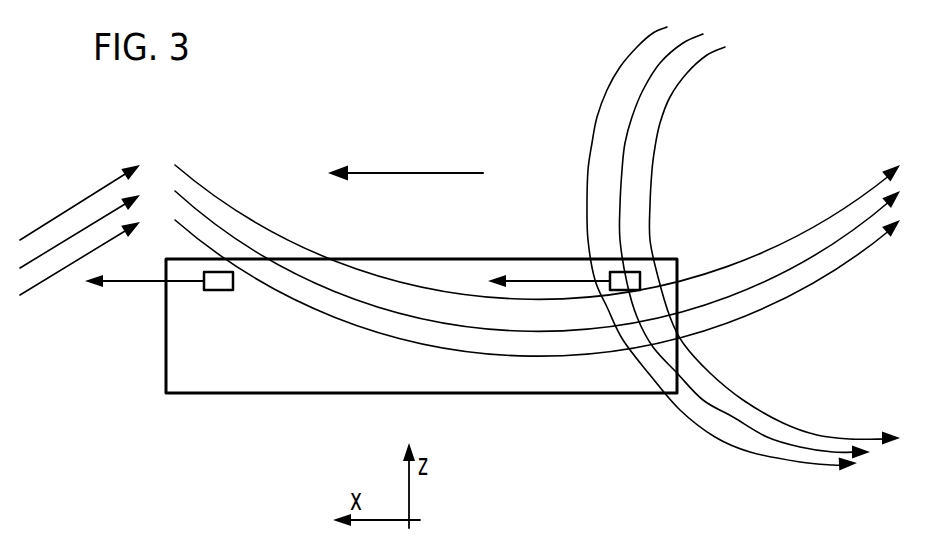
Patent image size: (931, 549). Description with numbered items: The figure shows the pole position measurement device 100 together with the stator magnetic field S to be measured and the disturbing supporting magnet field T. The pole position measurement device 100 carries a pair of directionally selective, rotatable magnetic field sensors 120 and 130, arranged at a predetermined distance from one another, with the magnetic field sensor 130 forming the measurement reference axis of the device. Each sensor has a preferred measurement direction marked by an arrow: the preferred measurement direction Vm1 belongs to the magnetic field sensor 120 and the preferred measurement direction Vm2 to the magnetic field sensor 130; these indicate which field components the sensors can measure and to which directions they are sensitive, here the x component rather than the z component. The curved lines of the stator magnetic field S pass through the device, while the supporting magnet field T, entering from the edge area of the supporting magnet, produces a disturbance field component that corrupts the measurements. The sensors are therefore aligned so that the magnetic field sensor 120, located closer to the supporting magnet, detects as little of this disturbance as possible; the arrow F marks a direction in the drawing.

The pole position measurement device 100 is at (268, 395).
The magnetic field sensor 120 is at (643, 277).
The magnetic field sensor 130 is at (213, 291).
The stator magnetic field S is at (72, 210).
The force / direction of motion F is at (405, 156).
The preferred measurement direction Vm1 is at (542, 278).
The preferred measurement direction Vm2 is at (117, 285).
The supporting magnet field T is at (740, 398).